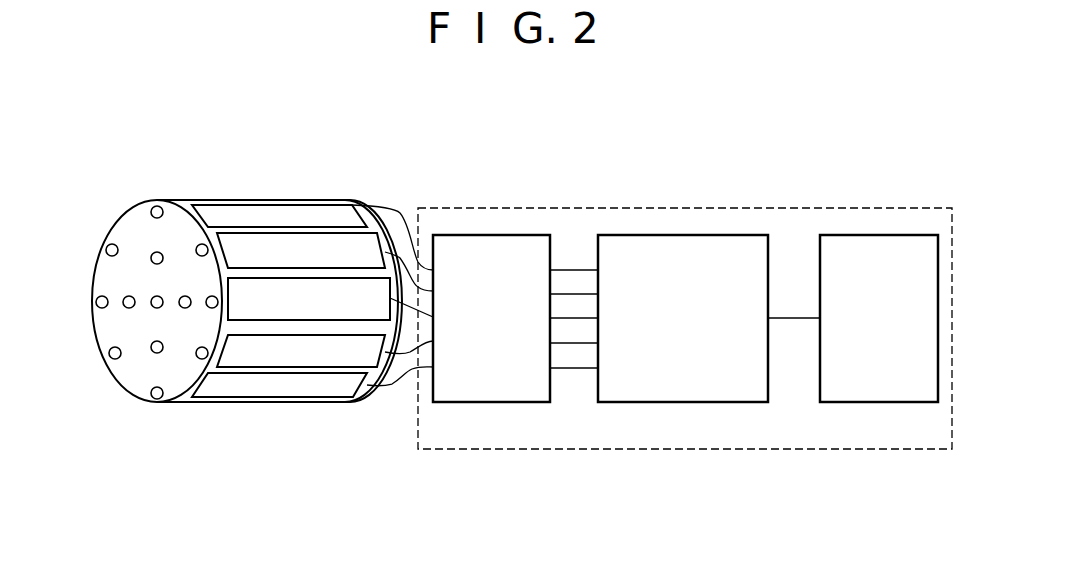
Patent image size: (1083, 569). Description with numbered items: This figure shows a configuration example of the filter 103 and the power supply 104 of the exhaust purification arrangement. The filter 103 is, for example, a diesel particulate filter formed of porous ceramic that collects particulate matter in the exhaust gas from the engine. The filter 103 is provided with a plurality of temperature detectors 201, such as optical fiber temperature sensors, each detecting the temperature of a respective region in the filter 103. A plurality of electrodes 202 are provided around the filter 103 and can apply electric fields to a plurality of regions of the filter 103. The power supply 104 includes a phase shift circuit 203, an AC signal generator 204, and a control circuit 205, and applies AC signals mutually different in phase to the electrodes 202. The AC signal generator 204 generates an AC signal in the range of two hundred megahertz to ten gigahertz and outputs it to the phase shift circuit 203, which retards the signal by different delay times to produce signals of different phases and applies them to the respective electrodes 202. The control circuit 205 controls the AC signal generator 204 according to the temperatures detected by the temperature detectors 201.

The filter 103 is at (275, 405).
The power supply 104 is at (600, 447).
The temperature detector 201 is at (129, 294).
The electrode 202 is at (293, 210).
The phase shift circuit 203 is at (488, 402).
The AC signal generator 204 is at (683, 402).
The control circuit 205 is at (895, 402).